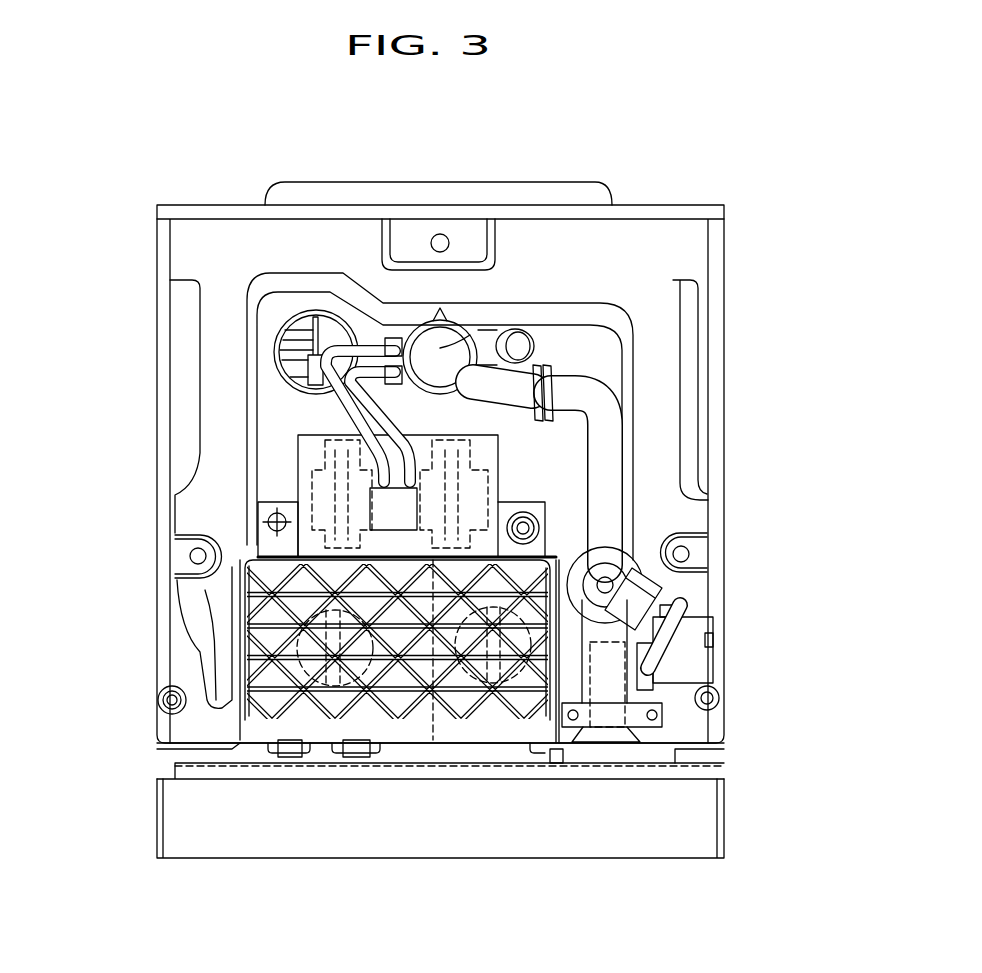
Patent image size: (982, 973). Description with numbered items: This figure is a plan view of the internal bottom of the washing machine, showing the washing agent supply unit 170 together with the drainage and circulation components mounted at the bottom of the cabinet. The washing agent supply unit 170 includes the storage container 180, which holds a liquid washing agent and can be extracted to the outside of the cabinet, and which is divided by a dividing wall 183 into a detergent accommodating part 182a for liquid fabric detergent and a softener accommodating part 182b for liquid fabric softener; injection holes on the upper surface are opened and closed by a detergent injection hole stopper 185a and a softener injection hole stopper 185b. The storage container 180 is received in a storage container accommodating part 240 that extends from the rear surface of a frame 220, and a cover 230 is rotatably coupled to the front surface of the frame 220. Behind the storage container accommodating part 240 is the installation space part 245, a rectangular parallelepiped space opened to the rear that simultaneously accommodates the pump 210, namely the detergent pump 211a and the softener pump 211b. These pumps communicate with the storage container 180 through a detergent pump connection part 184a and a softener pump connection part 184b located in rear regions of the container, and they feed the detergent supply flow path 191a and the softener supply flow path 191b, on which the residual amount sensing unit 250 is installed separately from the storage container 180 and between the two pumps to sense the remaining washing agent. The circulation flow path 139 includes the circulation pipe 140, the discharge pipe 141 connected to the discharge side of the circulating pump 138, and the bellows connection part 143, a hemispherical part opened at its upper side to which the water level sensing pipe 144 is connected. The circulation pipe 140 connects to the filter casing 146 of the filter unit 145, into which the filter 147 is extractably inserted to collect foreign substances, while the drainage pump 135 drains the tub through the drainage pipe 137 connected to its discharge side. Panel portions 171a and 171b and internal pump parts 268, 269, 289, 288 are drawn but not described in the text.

The residual amount sensing unit 250 is at (407, 457).
The washing agent supply unit 170 is at (232, 722).
The detergent pump connection part 184a is at (180, 557).
The first panel portion 171a is at (235, 378).
The second panel portion 171b is at (522, 458).
The circulation flow path 139 is at (719, 420).
The circulation pipe 140 is at (625, 443).
The discharge pipe 141 is at (625, 497).
The softener pump connection part 184b is at (655, 540).
The installation space part 245 is at (300, 450).
The pump 210 is at (262, 494).
The detergent pump 211a is at (330, 487).
The softener pump 211b is at (413, 508).
The detergent supply flow path 191a is at (308, 244).
The pump body 268 is at (300, 340).
The pump impeller 269 is at (323, 345).
The softener supply flow path 191b is at (372, 288).
The first connection pipe 289 is at (367, 340).
The second connection pipe 288 is at (403, 338).
The bellows connection part 143 is at (463, 334).
The water level sensing pipe 144 is at (492, 330).
The storage container accommodating part 240 is at (250, 613).
The circulating pump 138 is at (660, 572).
The drainage pipe 137 is at (670, 627).
The drainage pump 135 is at (660, 684).
The filter unit 145 is at (619, 777).
The filter 147 is at (611, 720).
The filter casing 146 is at (647, 735).
The storage container 180 is at (440, 844).
The detergent accommodating part 182a is at (400, 733).
The dividing wall 183 is at (443, 733).
The softener accommodating part 182b is at (490, 733).
The cover 230 is at (368, 815).
The frame 220 is at (322, 732).
The detergent injection hole stopper 185a is at (287, 742).
The softener injection hole stopper 185b is at (540, 733).